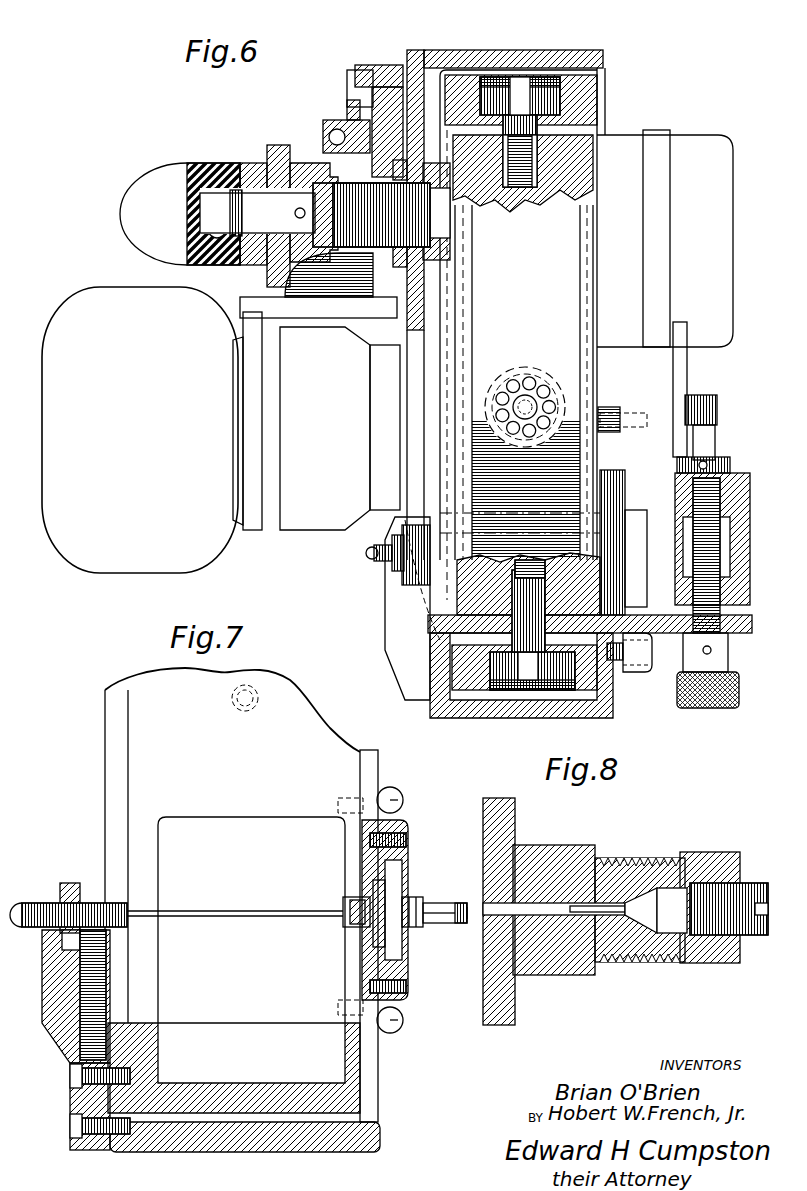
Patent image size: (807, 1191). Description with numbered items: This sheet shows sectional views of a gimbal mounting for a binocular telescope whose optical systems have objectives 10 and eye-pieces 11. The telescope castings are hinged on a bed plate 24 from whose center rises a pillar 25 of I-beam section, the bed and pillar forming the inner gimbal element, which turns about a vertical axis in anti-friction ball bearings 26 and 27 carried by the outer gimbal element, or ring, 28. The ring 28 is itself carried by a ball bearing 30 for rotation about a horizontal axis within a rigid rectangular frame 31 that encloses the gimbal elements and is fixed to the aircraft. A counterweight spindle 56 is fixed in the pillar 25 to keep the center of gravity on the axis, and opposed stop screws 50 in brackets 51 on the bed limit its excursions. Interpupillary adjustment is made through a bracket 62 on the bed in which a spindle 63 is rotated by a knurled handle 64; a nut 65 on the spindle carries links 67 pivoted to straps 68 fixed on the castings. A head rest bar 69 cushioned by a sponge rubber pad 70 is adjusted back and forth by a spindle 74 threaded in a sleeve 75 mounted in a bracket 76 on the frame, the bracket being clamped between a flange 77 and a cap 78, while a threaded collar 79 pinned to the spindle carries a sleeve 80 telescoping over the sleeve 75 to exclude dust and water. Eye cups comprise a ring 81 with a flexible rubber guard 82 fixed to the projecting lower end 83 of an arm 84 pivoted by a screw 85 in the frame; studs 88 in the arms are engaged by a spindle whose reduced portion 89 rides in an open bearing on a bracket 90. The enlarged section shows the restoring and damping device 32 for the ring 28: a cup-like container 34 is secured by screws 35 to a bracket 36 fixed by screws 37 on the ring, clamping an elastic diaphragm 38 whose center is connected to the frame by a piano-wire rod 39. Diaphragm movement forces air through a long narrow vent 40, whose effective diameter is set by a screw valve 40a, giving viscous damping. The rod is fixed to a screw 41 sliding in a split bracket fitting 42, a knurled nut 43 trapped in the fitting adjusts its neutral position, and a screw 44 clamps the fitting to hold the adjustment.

In FIG. 6, the objective 10 is at (734, 222).
In FIG. 6, the eye-piece 11 is at (305, 532).
In FIG. 6, the bed plate 24 is at (432, 626).
In FIG. 6, the pillar 25 is at (523, 188).
In FIG. 6, the ball bearing 26 is at (492, 688).
In FIG. 6, the ball bearing 27 is at (560, 100).
In FIG. 6, the outer gimbal element 28 is at (590, 115).
In FIG. 7, the outer gimbal element 28 is at (358, 1085).
In FIG. 6, the ball bearing 30 is at (540, 387).
In FIG. 6, the frame 31 is at (540, 50).
In FIG. 7, the frame 31 is at (328, 1150).
In FIG. 7, the restoring and damping device 32 is at (400, 830).
In FIG. 7, the container 34 is at (404, 845).
In FIG. 8, the container 34 is at (512, 830).
In FIG. 7, the screws 35 is at (406, 986).
In FIG. 7, the bracket 36 is at (373, 955).
In FIG. 7, the screws 37 is at (395, 805).
In FIG. 7, the elastic circular diaphragm 38 is at (402, 875).
In FIG. 7, the wire rod 39 is at (258, 910).
In FIG. 7, the vent 40 is at (412, 900).
In FIG. 8, the vent 40 is at (530, 905).
In FIG. 7, the screw valve 40a is at (462, 924).
In FIG. 8, the screw valve 40a is at (752, 882).
In FIG. 6, the screw 41 is at (378, 560).
In FIG. 7, the screw 41 is at (28, 928).
In FIG. 6, the split bracket fitting 42 is at (385, 600).
In FIG. 7, the split bracket fitting 42 is at (90, 928).
In FIG. 6, the knurled nut 43 is at (400, 535).
In FIG. 7, the knurled nut 43 is at (66, 882).
In FIG. 7, the screw 44 is at (95, 940).
In FIG. 6, the stop screws 50 is at (617, 662).
In FIG. 6, the brackets 51 is at (640, 672).
In FIG. 6, the spindle 56 is at (612, 408).
In FIG. 6, the bracket 62 is at (748, 473).
In FIG. 6, the spindle 63 is at (722, 604).
In FIG. 6, the knurled handle 64 is at (737, 680).
In FIG. 6, the nut 65 is at (722, 522).
In FIG. 6, the link 67 is at (715, 440).
In FIG. 6, the strap 68 is at (686, 342).
In FIG. 6, the bar 69 is at (248, 163).
In FIG. 6, the pad 70 is at (200, 195).
In FIG. 6, the spindle 74 is at (245, 258).
In FIG. 6, the sleeve 75 is at (388, 183).
In FIG. 6, the bracket 76 is at (418, 52).
In FIG. 6, the flange 77 is at (392, 298).
In FIG. 6, the cap 78 is at (450, 233).
In FIG. 6, the threaded collar 79 is at (276, 145).
In FIG. 6, the sleeve 80 is at (330, 165).
In FIG. 6, the ring 81 is at (256, 532).
In FIG. 6, the flexible rubber guard 82 is at (100, 555).
In FIG. 6, the projecting lower end 83 is at (244, 299).
In FIG. 6, the arm 84 is at (362, 68).
In FIG. 6, the screw 85 is at (347, 82).
In FIG. 6, the stud 88 is at (347, 104).
In FIG. 6, the reduced-diameter portion 89 is at (326, 136).
In FIG. 6, the bracket 90 is at (382, 90).